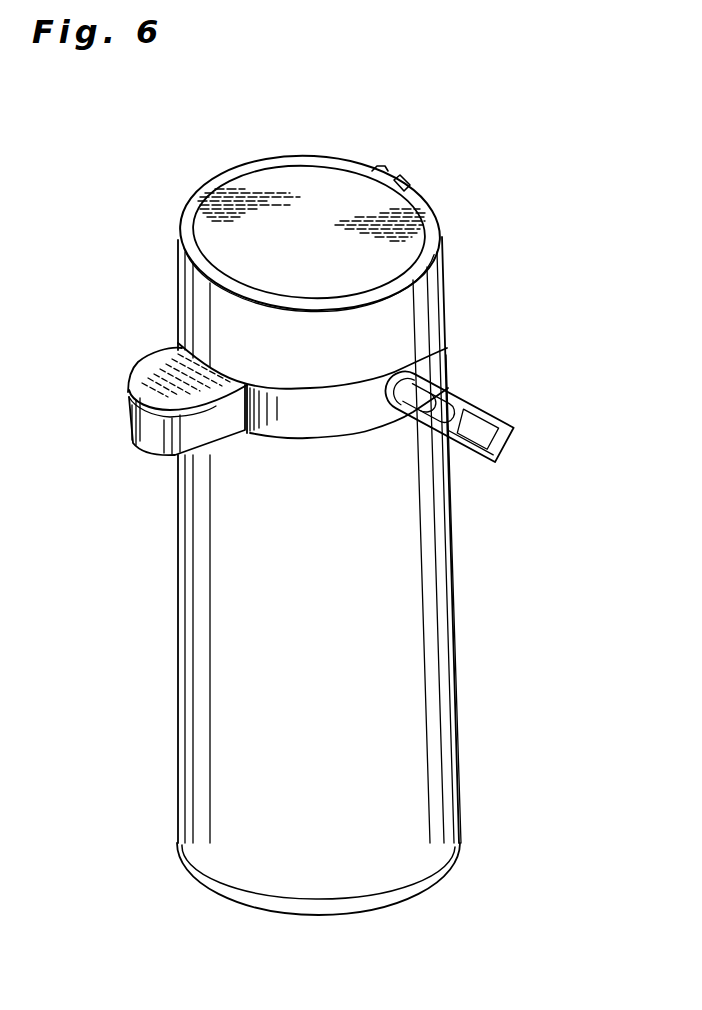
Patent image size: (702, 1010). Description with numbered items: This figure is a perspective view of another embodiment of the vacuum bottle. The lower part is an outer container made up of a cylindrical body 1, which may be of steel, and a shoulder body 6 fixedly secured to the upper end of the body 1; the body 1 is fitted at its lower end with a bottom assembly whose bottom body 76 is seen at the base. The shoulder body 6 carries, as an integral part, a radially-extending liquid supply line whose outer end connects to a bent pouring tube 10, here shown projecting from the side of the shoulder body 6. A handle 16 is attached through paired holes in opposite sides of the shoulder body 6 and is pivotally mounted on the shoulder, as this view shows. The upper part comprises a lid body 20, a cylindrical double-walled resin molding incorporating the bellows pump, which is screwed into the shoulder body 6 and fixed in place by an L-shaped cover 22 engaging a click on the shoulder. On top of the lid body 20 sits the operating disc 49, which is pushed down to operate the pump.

The cylindrical body 1 is at (440, 552).
The shoulder body 6 is at (437, 358).
The pouring tube 10 is at (152, 435).
The handle 16 is at (473, 403).
The lid body 20 is at (430, 283).
The L-shaped cover 22 is at (163, 382).
The operating disc 49 is at (320, 182).
The bottom body 76 is at (408, 885).